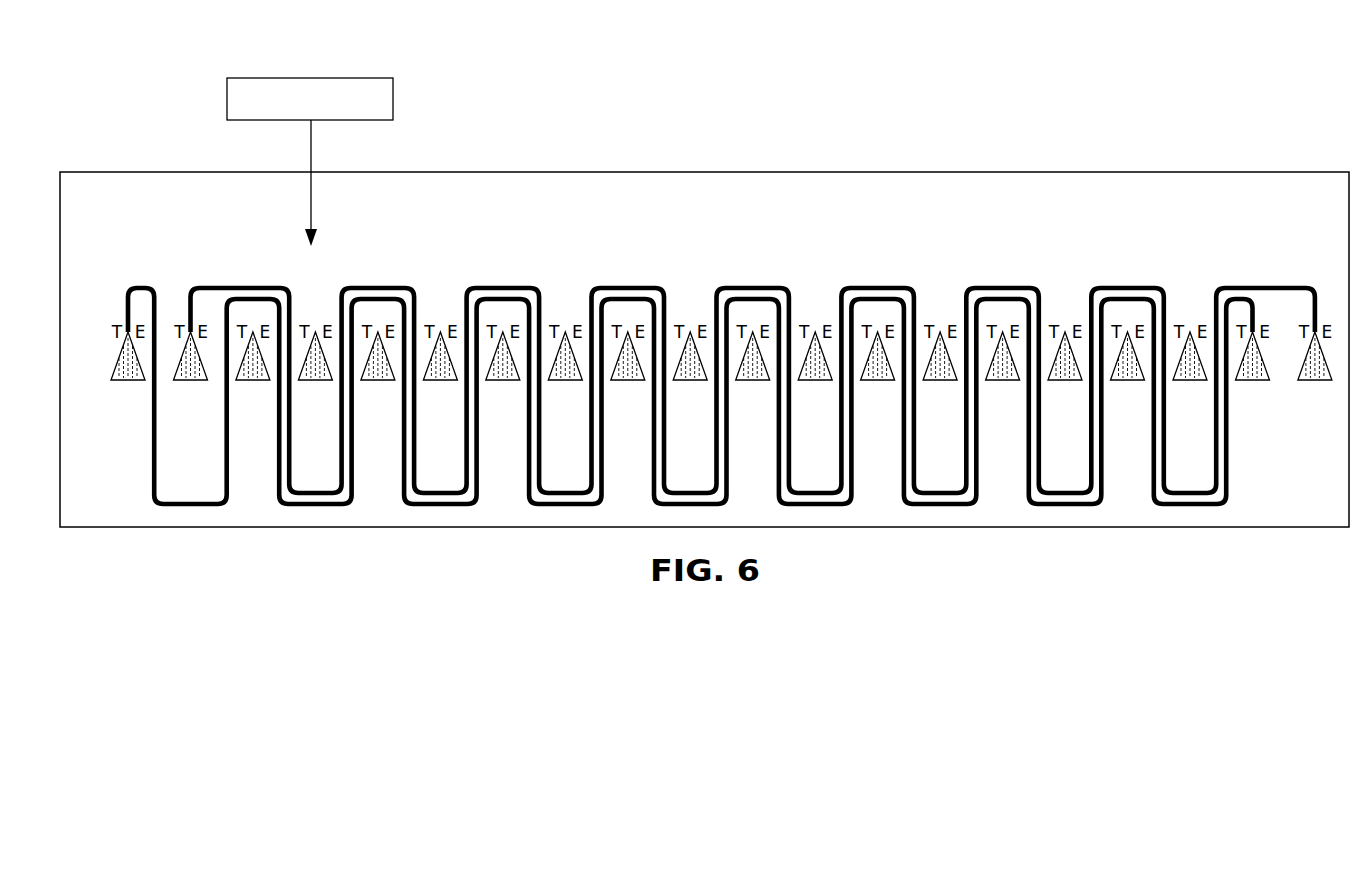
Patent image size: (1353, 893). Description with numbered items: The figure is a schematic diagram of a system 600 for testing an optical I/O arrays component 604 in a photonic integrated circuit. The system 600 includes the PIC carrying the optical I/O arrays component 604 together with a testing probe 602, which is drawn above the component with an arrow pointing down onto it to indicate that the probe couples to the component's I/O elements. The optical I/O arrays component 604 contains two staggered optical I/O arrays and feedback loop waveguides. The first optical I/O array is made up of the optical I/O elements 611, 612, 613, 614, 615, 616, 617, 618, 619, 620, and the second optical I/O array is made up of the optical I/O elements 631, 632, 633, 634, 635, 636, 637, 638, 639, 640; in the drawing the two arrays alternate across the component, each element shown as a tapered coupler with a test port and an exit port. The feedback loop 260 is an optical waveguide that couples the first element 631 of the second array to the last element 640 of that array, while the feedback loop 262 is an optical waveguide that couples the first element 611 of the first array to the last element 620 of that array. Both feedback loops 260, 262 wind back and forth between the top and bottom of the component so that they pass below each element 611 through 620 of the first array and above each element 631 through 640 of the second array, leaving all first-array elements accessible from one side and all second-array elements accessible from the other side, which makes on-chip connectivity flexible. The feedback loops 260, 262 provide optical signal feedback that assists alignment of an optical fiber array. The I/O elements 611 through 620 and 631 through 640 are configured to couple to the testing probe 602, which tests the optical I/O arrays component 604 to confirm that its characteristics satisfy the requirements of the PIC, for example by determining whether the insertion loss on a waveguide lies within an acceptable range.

The system 600 is at (1129, 79).
The testing probe 602 is at (227, 100).
The optical I/O arrays component 604 is at (609, 166).
The feedback loop 260 is at (140, 286).
The feedback loop 262 is at (1268, 286).
The optical I/O element 611 is at (189, 380).
The optical I/O element 612 is at (313, 380).
The optical I/O element 613 is at (438, 380).
The optical I/O element 614 is at (563, 380).
The optical I/O element 615 is at (688, 380).
The optical I/O element 616 is at (813, 380).
The optical I/O element 617 is at (938, 380).
The optical I/O element 618 is at (1063, 380).
The optical I/O element 619 is at (1188, 380).
The optical I/O element 620 is at (1313, 380).
The optical I/O element 631 is at (126, 380).
The optical I/O element 632 is at (251, 380).
The optical I/O element 633 is at (376, 380).
The optical I/O element 634 is at (501, 380).
The optical I/O element 635 is at (626, 380).
The optical I/O element 636 is at (751, 380).
The optical I/O element 637 is at (876, 380).
The optical I/O element 638 is at (1001, 380).
The optical I/O element 639 is at (1126, 380).
The optical I/O element 640 is at (1251, 380).